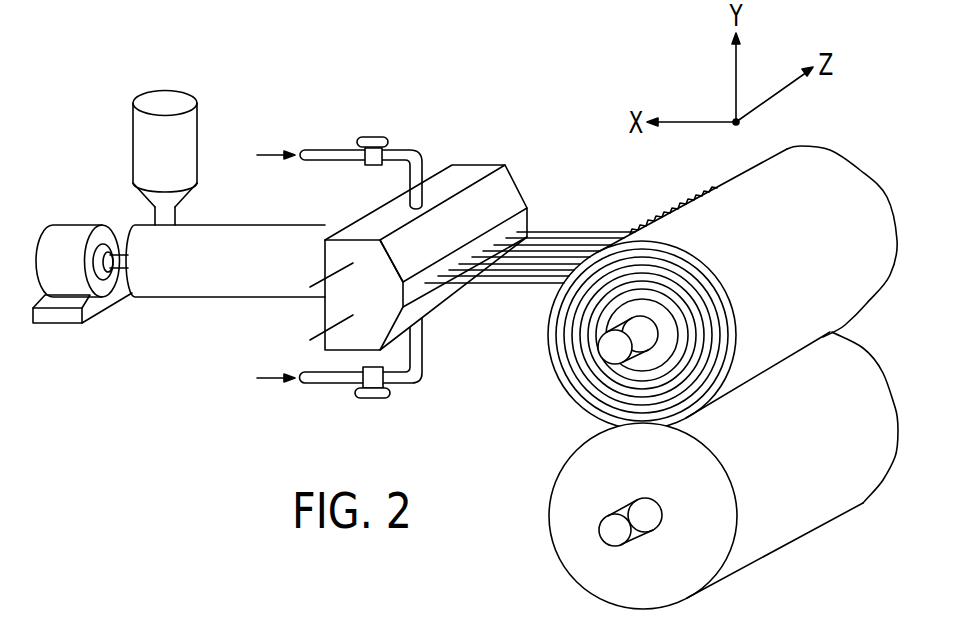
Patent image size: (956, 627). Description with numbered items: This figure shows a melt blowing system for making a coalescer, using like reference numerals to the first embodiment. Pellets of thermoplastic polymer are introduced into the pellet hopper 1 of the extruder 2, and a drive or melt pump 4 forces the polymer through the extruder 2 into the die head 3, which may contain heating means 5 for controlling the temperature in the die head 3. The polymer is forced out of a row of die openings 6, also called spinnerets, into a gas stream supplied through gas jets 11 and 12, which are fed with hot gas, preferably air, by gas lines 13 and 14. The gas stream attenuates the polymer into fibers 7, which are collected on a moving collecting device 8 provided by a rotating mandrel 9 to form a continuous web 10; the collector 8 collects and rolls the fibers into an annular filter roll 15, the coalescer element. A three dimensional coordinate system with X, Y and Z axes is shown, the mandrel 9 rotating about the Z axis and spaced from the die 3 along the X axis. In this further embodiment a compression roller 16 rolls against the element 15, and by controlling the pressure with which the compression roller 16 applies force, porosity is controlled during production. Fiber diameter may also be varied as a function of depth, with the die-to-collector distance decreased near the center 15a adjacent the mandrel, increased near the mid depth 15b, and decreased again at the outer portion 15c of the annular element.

The pellet hopper 1 is at (128, 138).
The extruder 2 is at (207, 222).
The die head 3 is at (467, 172).
The melt pump 4 is at (36, 250).
The heating means 5 is at (340, 320).
The die openings 6 is at (465, 257).
The fibers 7 is at (558, 240).
The moving collecting device 8 is at (672, 192).
The rotating mandrel 9 is at (655, 358).
The continuous web 10 is at (632, 247).
The gas jet 11 is at (413, 268).
The gas jet 12 is at (410, 307).
The gas line 13 is at (408, 178).
The gas line 14 is at (422, 377).
The annular filter roll 15 is at (722, 311).
The center of annular element 15a is at (687, 335).
The mid depth of media 15b is at (698, 312).
The outer portion of annular element 15c is at (697, 265).
The compression roller 16 is at (573, 482).